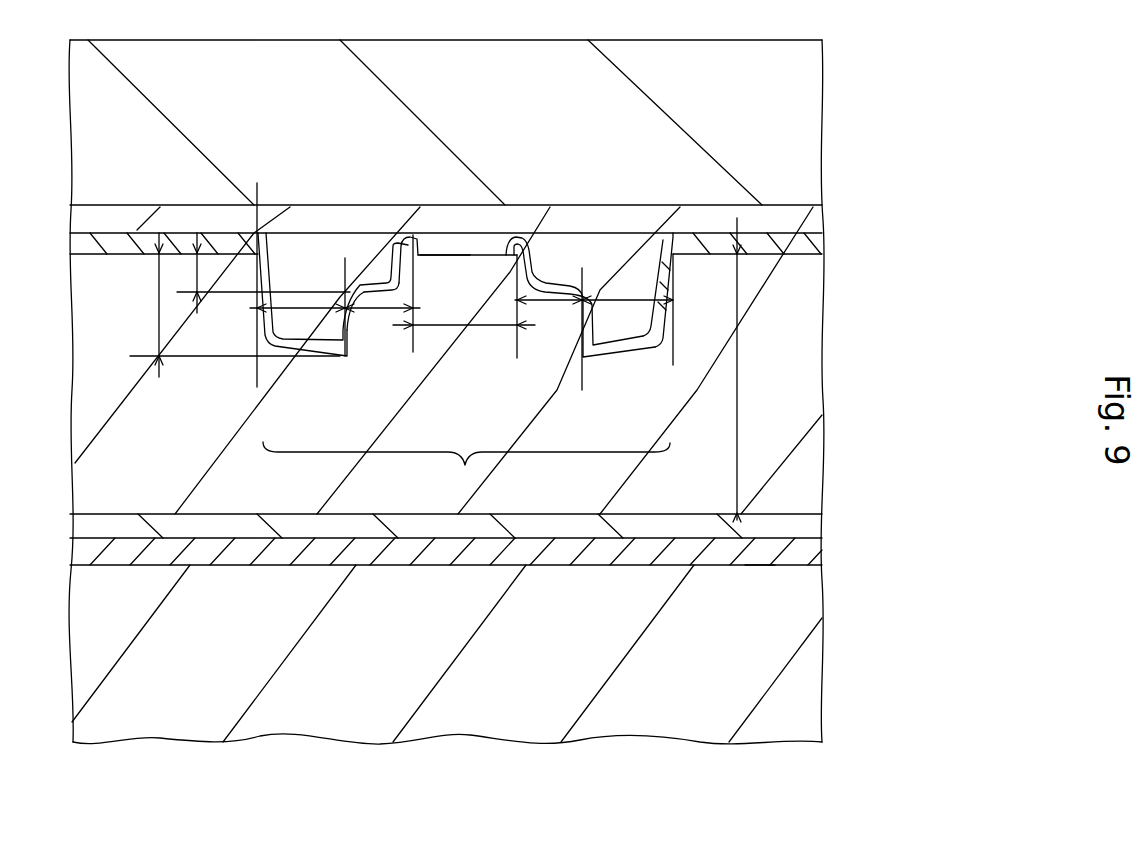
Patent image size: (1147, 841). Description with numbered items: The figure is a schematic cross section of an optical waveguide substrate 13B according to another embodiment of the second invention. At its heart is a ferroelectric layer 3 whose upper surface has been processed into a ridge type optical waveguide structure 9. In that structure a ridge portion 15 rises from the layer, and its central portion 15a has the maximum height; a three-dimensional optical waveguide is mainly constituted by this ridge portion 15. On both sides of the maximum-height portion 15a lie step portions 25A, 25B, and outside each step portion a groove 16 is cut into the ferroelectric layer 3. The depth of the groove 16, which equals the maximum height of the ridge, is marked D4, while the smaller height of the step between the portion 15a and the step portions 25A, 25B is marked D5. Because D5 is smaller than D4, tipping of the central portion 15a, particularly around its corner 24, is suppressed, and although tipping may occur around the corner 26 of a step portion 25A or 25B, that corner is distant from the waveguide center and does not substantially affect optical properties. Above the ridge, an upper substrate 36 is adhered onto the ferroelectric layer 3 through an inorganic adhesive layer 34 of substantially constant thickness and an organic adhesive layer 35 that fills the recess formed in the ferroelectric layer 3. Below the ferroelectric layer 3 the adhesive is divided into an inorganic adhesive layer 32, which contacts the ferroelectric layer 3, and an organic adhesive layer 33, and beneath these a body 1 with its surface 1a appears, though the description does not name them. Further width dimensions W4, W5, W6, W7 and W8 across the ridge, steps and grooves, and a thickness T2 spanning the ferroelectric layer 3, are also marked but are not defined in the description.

The optical waveguide substrate 13B is at (908, 123).
The upper substrate 36 is at (813, 127).
The organic adhesive layer 35 is at (815, 222).
The inorganic adhesive layer 34 is at (810, 245).
The ferroelectric layer 3 is at (840, 314).
The inorganic adhesive layer 32 is at (810, 524).
The organic adhesive layer 33 is at (807, 553).
The substrate 1 is at (800, 621).
The substrate surface 1a is at (757, 547).
The ridge type optical waveguide structure 9 is at (466, 472).
The corner 24 is at (410, 263).
The step portion 25A is at (390, 277).
The step portion 25B is at (560, 300).
The corner 26 is at (385, 322).
The ridge portion 15 is at (513, 247).
The portion of maximum height 15a is at (450, 247).
The groove 16 is at (655, 250).
The depth of groove D4 is at (159, 280).
The height of step D5 is at (193, 273).
The width W4 is at (450, 323).
The width W5 is at (358, 358).
The width W6 is at (540, 305).
The width W7 is at (300, 305).
The width W8 is at (625, 303).
The thickness T2 is at (740, 400).